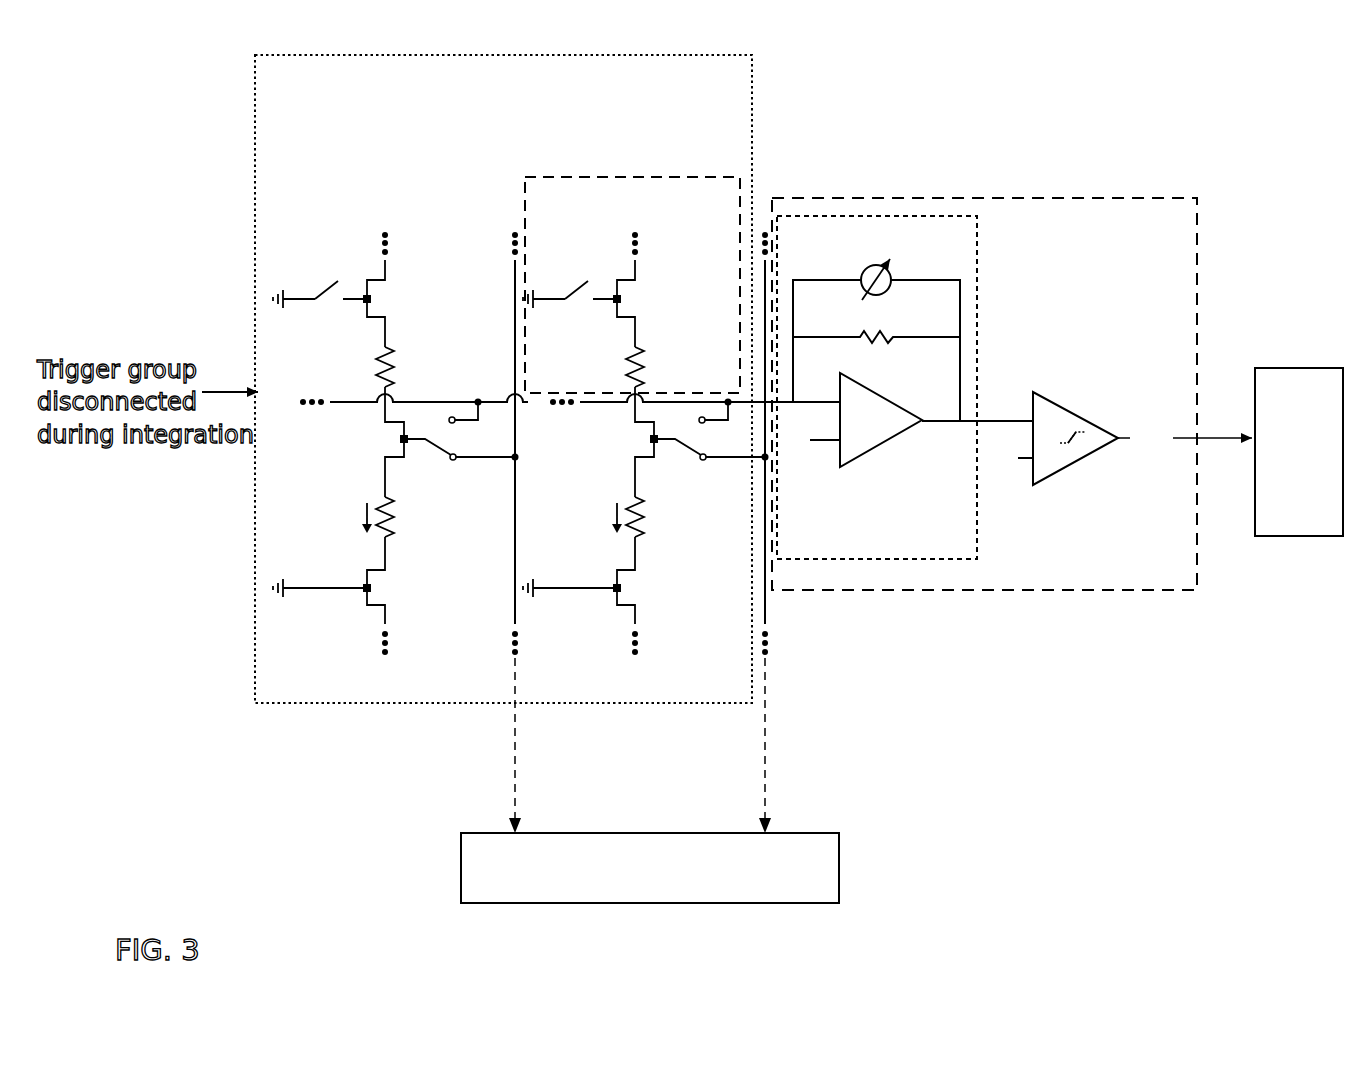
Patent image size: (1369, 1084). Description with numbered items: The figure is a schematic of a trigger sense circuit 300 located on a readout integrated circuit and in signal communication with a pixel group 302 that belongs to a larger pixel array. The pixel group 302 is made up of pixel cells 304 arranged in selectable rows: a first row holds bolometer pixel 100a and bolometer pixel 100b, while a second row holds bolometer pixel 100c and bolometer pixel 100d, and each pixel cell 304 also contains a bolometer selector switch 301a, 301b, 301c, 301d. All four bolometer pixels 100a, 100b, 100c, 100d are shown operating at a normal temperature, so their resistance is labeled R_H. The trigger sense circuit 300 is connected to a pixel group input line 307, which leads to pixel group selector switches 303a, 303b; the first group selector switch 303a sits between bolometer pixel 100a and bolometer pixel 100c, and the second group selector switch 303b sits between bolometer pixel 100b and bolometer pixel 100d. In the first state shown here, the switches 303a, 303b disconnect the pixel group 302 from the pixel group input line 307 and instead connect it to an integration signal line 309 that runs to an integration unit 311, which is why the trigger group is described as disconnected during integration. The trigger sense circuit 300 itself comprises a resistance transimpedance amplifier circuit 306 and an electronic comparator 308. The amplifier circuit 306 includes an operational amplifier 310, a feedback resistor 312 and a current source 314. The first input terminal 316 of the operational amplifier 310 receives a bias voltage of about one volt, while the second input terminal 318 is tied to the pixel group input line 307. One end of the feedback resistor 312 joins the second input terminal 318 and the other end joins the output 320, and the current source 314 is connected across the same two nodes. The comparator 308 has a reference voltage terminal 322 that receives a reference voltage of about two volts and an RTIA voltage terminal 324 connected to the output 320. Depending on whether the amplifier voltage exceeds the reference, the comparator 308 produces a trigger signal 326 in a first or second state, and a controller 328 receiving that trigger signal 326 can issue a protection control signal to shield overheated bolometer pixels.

The trigger sense circuit 300 is at (1113, 196).
The pixel group 302 is at (253, 109).
The pixel cell 304 is at (661, 176).
The resistance transimpedance amplifier circuit 306 is at (979, 243).
The pixel group input line 307 is at (354, 411).
The electronic comparator 308 is at (1060, 411).
The integration signal line 309 is at (501, 236).
The operational amplifier 310 is at (870, 451).
The integration unit 311 is at (838, 872).
The feedback resistor 312 is at (891, 343).
The current source 314 is at (893, 277).
The first input terminal 316 is at (822, 439).
The second input terminal 318 is at (825, 401).
The output 320 is at (975, 450).
The reference voltage terminal 322 is at (1018, 463).
The RTIA voltage terminal 324 is at (1013, 417).
The trigger signal 326 is at (1205, 442).
The controller 328 is at (1331, 367).
The bolometer selector switch 301a is at (378, 280).
The bolometer selector switch 301b is at (628, 280).
The bolometer selector switch 301c is at (366, 569).
The bolometer selector switch 301d is at (616, 569).
The first pixel group selector switch 303a is at (417, 455).
The second pixel group selector switch 303b is at (669, 455).
The bolometer pixel 100a is at (395, 350).
The bolometer pixel 100b is at (645, 350).
The bolometer pixel 100c is at (386, 527).
The bolometer pixel 100d is at (636, 527).